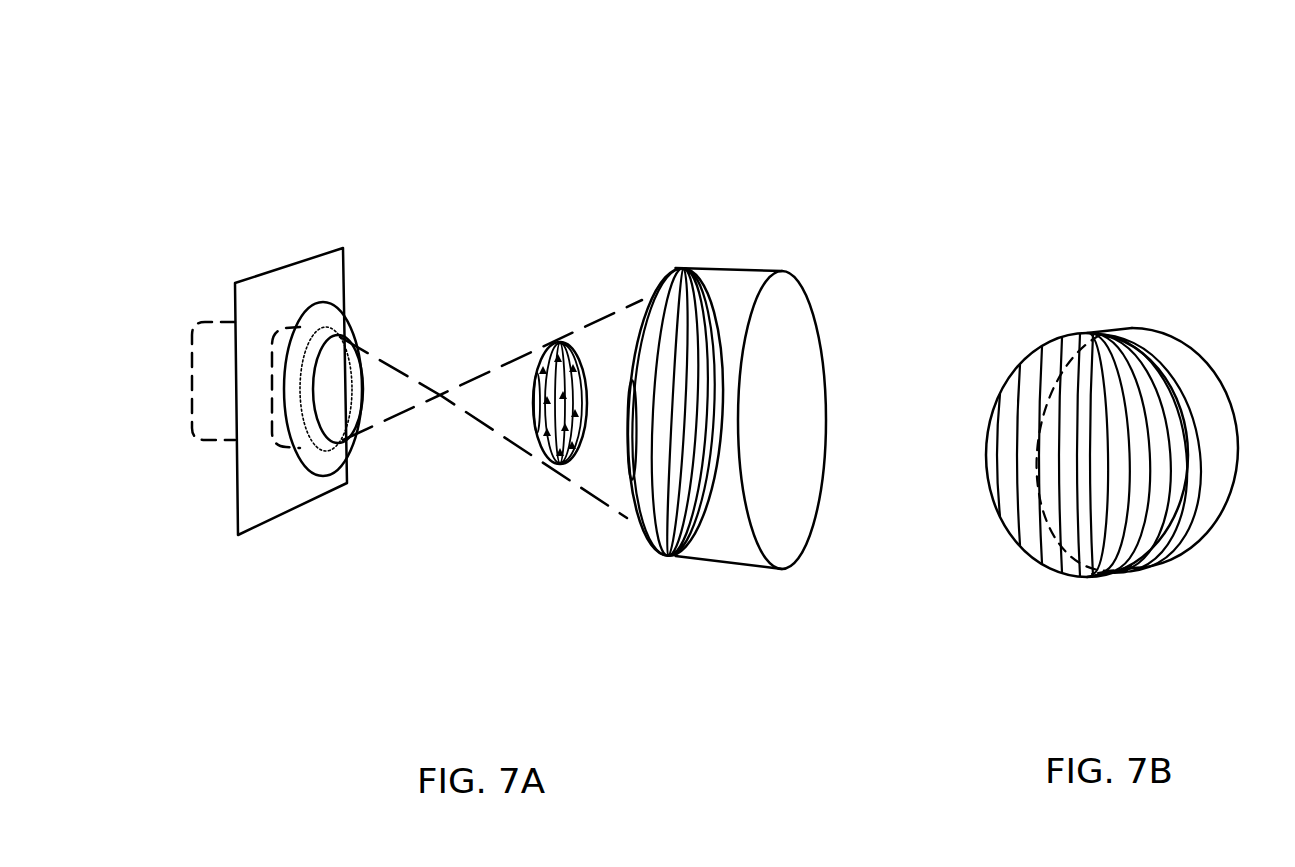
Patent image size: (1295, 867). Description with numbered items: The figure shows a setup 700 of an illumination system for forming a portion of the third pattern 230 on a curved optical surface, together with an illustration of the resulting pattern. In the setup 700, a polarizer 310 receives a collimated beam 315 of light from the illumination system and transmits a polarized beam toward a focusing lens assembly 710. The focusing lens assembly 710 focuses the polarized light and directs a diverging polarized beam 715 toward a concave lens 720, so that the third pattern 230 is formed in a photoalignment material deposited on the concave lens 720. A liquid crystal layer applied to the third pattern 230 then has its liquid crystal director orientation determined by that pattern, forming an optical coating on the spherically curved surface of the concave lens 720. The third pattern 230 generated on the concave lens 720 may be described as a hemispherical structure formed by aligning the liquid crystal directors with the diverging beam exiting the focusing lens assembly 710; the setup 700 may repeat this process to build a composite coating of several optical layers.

In FIG. 7A, the setup 700 is at (455, 357).
In FIG. 7A, the collimated beam 315 is at (225, 380).
In FIG. 7A, the polarizer 310 is at (262, 498).
In FIG. 7A, the focusing lens assembly 710 is at (322, 465).
In FIG. 7A, the diverging polarized beam 715 is at (547, 353).
In FIG. 7A, the concave lens 720 is at (730, 313).
In FIG. 7B, the concave lens 720 is at (1155, 348).
In FIG. 7B, the third pattern 230 is at (1040, 522).